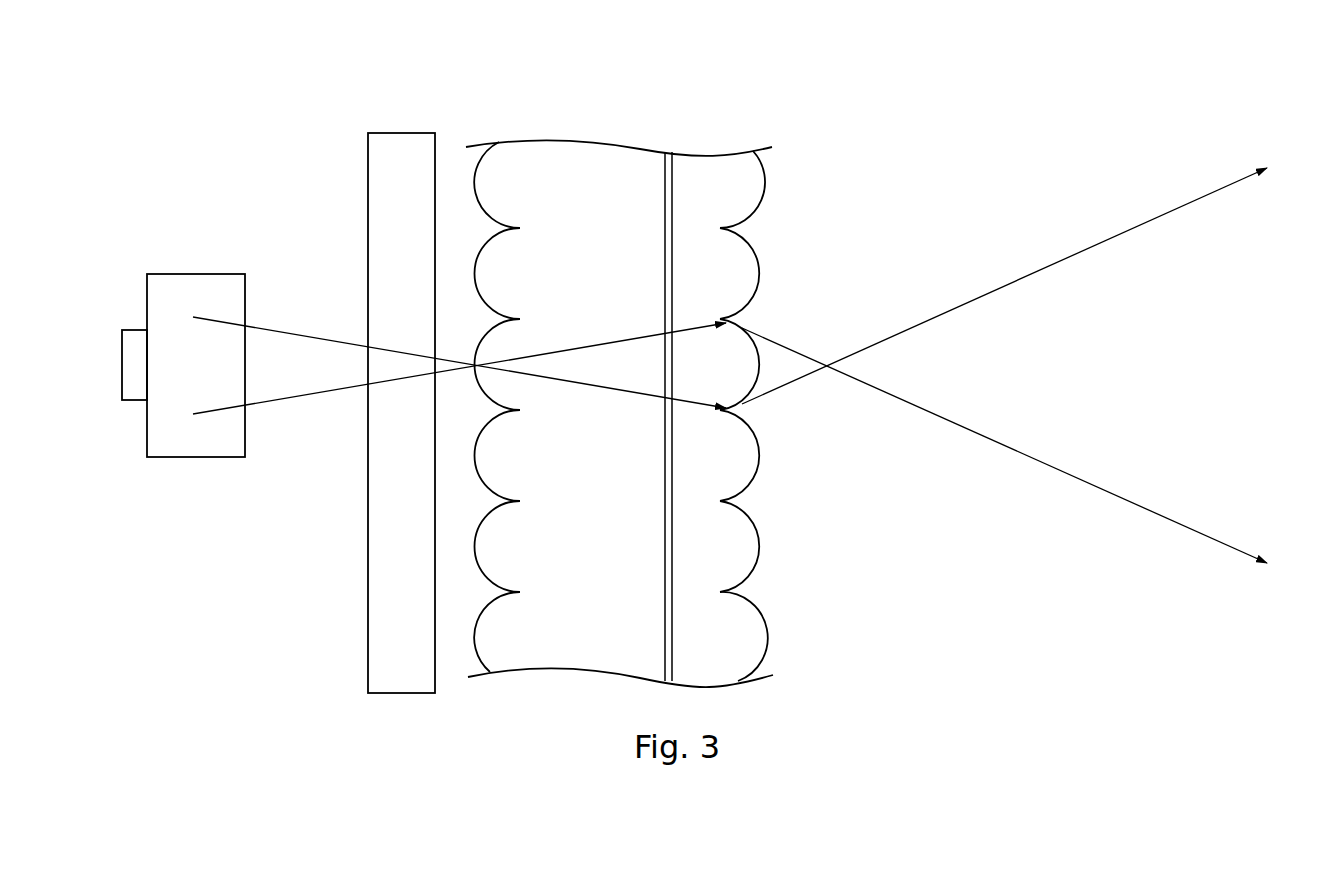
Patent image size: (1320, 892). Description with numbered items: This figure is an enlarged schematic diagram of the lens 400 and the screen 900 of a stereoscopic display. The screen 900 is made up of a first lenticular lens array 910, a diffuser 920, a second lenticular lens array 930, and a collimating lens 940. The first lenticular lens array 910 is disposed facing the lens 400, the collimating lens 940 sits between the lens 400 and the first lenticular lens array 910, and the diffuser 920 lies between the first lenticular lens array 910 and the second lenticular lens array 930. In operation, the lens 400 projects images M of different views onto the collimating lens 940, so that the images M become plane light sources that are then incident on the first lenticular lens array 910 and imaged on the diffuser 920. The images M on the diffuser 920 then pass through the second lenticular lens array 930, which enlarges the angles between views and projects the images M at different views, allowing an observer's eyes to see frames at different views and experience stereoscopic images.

The lens 400 is at (187, 300).
The images M is at (297, 399).
The screen 900 is at (752, 53).
The collimating lens 940 is at (398, 152).
The first lenticular lens array 910 is at (568, 152).
The diffuser 920 is at (671, 160).
The second lenticular lens array 930 is at (722, 160).